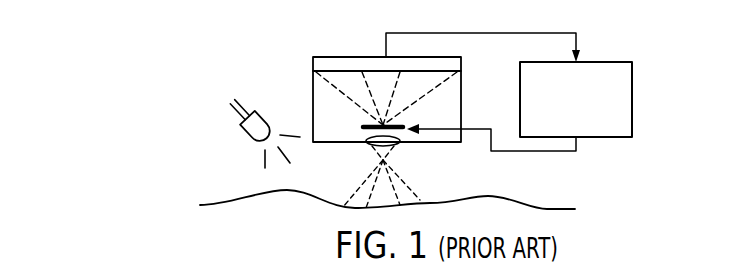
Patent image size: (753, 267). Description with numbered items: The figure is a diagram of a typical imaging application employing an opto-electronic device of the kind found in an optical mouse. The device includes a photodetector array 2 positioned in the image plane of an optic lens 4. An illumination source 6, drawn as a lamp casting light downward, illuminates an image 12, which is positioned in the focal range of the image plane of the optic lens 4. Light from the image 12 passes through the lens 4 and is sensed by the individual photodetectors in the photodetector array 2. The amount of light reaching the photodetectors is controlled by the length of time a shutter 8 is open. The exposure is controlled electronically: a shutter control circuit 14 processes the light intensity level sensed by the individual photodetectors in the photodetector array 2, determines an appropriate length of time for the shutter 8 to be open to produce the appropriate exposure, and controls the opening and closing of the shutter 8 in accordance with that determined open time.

The photodetector array 2 is at (328, 66).
The optic lens 4 is at (396, 147).
The illumination source 6 is at (263, 113).
The shutter 8 is at (363, 126).
The image 12 is at (553, 206).
The shutter control circuit 14 is at (633, 75).